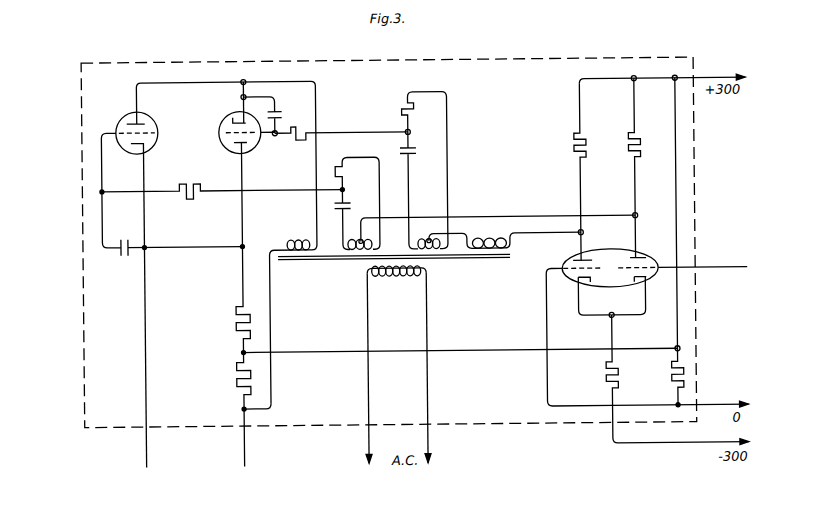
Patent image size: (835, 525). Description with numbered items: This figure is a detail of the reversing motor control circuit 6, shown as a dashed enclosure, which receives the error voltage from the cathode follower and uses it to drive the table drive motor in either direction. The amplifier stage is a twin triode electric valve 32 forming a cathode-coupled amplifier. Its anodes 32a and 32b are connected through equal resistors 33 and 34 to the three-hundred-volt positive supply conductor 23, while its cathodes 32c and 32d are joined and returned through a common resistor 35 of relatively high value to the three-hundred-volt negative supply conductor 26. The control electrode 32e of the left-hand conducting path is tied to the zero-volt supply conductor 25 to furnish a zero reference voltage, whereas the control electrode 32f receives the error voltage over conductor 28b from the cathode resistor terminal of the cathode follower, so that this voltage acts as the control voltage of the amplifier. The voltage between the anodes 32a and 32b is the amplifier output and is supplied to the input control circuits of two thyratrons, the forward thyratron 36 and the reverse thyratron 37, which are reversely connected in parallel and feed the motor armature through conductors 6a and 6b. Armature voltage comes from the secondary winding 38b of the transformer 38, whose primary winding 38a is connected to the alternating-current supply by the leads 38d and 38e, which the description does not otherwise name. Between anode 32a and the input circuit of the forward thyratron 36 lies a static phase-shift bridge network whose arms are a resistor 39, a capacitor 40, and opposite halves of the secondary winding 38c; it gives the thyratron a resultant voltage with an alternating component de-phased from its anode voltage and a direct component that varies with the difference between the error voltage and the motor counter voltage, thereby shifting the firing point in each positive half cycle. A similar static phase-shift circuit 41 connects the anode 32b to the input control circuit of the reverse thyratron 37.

The reversing motor control circuit 6 is at (176, 60).
The conductor 6a is at (144, 445).
The conductor 6b is at (250, 447).
The 300-volt positive supply conductor 23 is at (714, 78).
The zero-volt supply conductor 25 is at (717, 407).
The 300-volt negative supply conductor 26 is at (712, 445).
The conductor 28b is at (718, 269).
The twin triode electric valve 32 is at (620, 252).
The anode 32a is at (587, 258).
The anode 32b is at (641, 258).
The cathode 32c is at (572, 285).
The cathode 32d is at (648, 286).
The control electrode 32e is at (565, 264).
The control electrode 32f is at (624, 277).
The resistor 33 is at (576, 149).
The resistor 34 is at (631, 149).
The common resistor 35 is at (603, 382).
The forward thyratron 36 is at (226, 117).
The reverse thyratron 37 is at (121, 116).
The transformer 38 is at (315, 264).
The primary winding 38a is at (399, 277).
The secondary winding 38b is at (290, 240).
The secondary winding 38c is at (423, 240).
The A.C. supply lead 38d is at (366, 391).
The A.C. supply lead 38e is at (430, 391).
The resistor 39 is at (403, 106).
The capacitor 40 is at (418, 150).
The static phase-shift circuit 41 is at (354, 195).